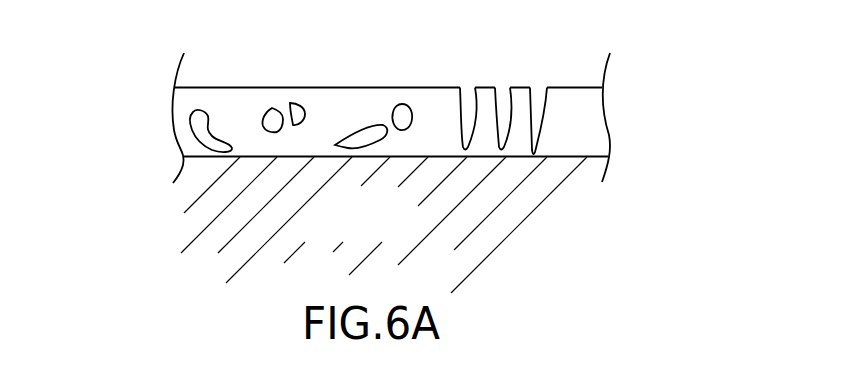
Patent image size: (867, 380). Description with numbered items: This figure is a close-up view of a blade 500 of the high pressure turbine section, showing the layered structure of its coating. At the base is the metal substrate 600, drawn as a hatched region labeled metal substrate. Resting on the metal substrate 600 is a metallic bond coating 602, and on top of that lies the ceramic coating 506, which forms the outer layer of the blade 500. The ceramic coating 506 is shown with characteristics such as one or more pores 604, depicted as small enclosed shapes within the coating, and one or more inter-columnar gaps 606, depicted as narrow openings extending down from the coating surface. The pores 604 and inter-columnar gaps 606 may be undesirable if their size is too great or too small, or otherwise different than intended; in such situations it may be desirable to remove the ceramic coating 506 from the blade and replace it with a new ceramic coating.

The blade 500 is at (130, 203).
The ceramic coating 506 is at (320, 108).
The metal substrate 600 is at (540, 203).
The metallic bond coating 602 is at (577, 156).
The pores 604 is at (271, 108).
The inter-columnar gaps 606 is at (538, 104).